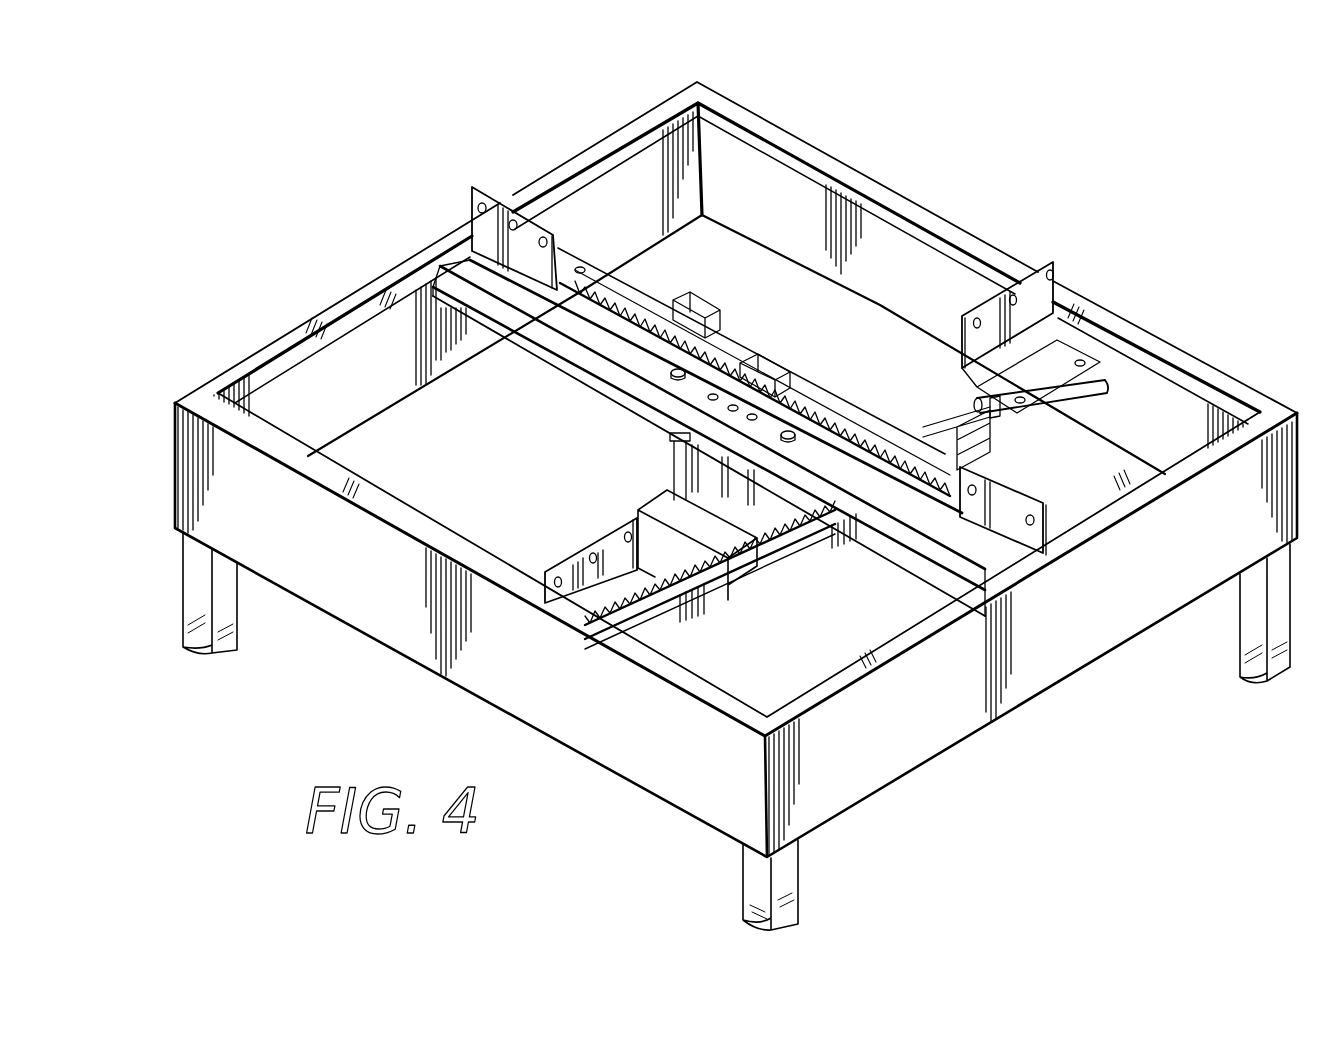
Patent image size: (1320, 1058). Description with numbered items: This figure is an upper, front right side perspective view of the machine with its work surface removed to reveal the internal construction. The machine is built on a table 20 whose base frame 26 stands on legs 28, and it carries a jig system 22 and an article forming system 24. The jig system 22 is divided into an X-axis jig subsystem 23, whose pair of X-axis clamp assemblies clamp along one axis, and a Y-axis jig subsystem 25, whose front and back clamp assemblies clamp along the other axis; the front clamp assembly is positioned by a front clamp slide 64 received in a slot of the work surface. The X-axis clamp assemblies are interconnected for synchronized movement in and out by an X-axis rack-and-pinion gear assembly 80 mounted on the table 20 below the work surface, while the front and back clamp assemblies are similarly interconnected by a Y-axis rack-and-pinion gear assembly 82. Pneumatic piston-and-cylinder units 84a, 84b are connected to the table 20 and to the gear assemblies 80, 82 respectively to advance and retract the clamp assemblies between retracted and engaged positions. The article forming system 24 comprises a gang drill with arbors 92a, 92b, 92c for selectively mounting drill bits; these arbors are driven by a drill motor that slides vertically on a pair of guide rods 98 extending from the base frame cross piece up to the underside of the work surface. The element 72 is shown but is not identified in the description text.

The table 20 is at (834, 128).
The jig system 22 is at (460, 438).
The X-axis jig subsystem 23 is at (1054, 495).
The article forming system 24 is at (632, 488).
The Y-axis jig subsystem 25 is at (1052, 254).
The base frame 26 is at (178, 666).
The legs 28 is at (1240, 665).
The front clamp slide 64 is at (472, 185).
The support bracket 72 is at (960, 317).
The X-axis rack-and-pinion gear assembly 80 is at (807, 390).
The Y-axis rack-and-pinion gear assembly 82 is at (938, 413).
The pneumatic piston-and-cylinder unit 84a is at (660, 296).
The pneumatic piston-and-cylinder unit 84b is at (1098, 399).
The arbor 92a is at (752, 506).
The arbor 92b is at (730, 512).
The arbor 92c is at (706, 562).
The guide rods 98 is at (674, 440).